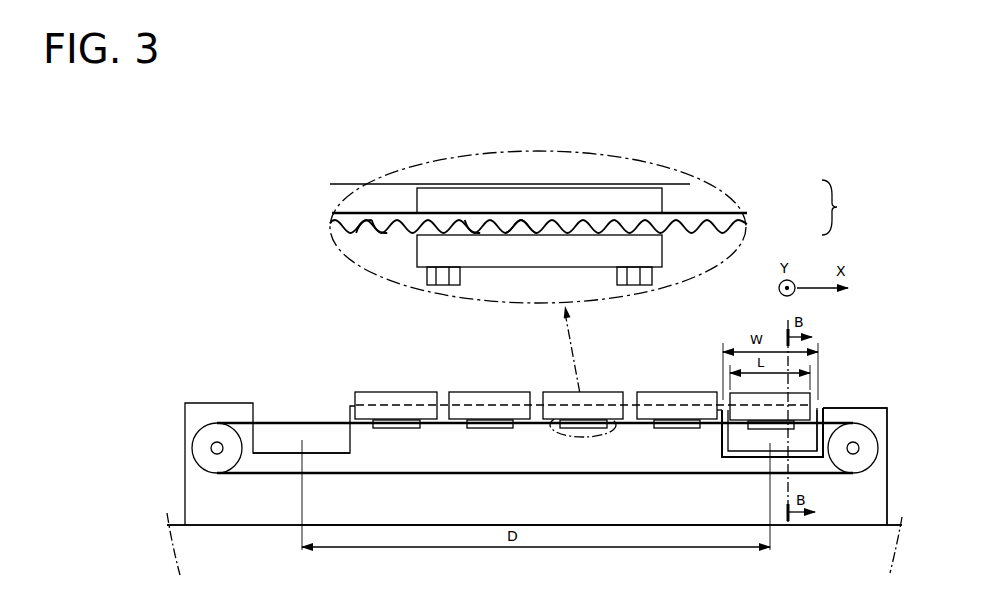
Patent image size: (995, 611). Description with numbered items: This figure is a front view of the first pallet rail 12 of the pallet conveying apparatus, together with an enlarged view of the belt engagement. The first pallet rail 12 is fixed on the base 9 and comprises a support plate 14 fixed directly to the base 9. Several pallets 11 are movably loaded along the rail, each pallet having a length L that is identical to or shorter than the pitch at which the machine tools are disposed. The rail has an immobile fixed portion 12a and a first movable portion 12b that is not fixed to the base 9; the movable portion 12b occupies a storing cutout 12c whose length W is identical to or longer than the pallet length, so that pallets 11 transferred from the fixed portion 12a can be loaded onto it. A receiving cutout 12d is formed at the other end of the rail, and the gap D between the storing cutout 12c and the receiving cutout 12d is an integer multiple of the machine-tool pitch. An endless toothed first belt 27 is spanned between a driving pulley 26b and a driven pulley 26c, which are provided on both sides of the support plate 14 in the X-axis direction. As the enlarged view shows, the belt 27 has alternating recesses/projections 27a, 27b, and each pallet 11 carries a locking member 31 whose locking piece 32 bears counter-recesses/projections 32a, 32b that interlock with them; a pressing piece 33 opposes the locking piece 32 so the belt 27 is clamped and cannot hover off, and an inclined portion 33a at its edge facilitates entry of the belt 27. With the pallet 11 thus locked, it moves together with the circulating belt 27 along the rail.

The base 9 is at (233, 520).
The pallet 11 is at (392, 391).
The first pallet rail 12 is at (395, 530).
The fixed portion 12a is at (444, 528).
The first movable portion 12b is at (752, 445).
The storing cutout 12c is at (812, 445).
The receiving cutout 12d is at (329, 447).
The support plate 14 is at (867, 497).
The driving pulley 26b is at (217, 428).
The driven pulley 26c is at (853, 430).
The first belt 27 is at (382, 213).
The recess/projection 27a is at (367, 224).
The recess/projection 27b is at (382, 235).
The locking member 31 is at (395, 430).
The locking piece 32 is at (662, 257).
The counter-recess/projection 32a is at (483, 232).
The counter-recess/projection 32b is at (519, 222).
The pressing piece 33 is at (662, 198).
The inclined portion 33a is at (607, 211).